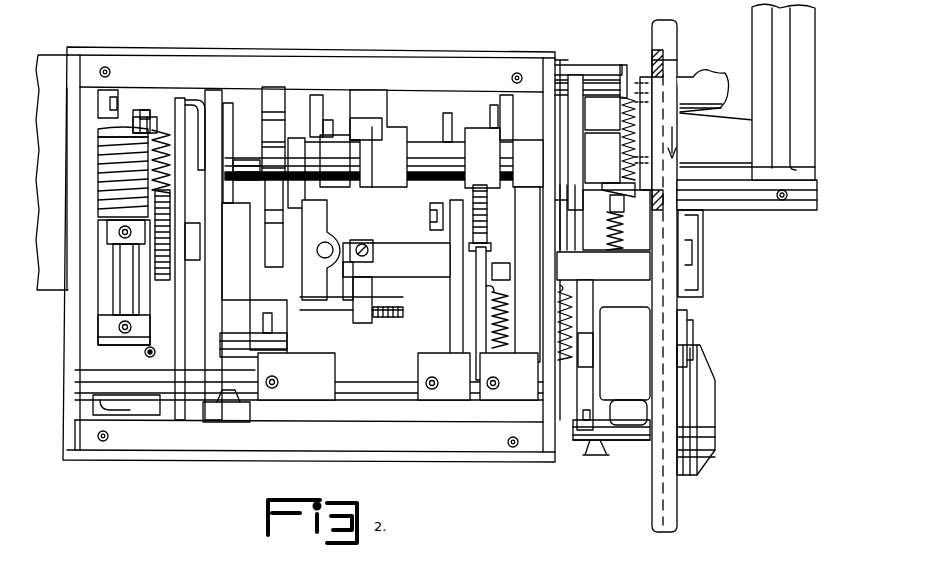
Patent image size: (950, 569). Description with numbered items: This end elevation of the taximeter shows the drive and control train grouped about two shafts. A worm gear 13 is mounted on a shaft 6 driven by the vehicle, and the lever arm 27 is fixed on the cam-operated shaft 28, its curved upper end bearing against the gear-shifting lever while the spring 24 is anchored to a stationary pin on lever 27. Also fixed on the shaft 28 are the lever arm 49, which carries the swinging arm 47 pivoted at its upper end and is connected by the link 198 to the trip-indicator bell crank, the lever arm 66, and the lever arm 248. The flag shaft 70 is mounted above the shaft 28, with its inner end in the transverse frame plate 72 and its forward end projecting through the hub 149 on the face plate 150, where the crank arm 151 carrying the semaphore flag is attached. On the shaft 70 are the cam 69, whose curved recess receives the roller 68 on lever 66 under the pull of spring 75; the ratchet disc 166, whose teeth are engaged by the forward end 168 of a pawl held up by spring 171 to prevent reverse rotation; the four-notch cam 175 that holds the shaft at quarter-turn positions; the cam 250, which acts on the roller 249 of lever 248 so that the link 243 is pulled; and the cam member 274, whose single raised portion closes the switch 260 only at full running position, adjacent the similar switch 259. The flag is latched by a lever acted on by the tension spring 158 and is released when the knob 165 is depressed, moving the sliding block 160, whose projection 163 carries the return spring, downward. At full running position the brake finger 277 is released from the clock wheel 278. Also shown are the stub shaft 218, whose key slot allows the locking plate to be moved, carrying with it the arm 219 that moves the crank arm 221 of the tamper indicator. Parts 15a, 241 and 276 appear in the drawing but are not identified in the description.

The shaft 6 is at (138, 283).
The worm gear 13 is at (110, 236).
The bolt 15a is at (150, 112).
The spring 24 is at (182, 100).
The lever arm 27 is at (176, 340).
The cam-operated shaft 28 is at (370, 402).
The swinging arm 47 is at (443, 193).
The lever arm 49 is at (458, 290).
The lever arm 66 is at (529, 150).
The roller 68 is at (507, 163).
The cam 69 is at (507, 102).
The cam shaft 70 is at (422, 148).
The transverse plate 72 is at (214, 97).
The spring 75 is at (505, 313).
The hub 149 is at (727, 182).
The face plate 150 is at (680, 325).
The crank arm 151 is at (766, 35).
The tension spring 158 is at (623, 127).
The sliding block 160 is at (623, 186).
The projection 163 is at (614, 208).
The knob 165 is at (731, 58).
The disc 166 is at (578, 117).
The forward end of pawl 168 is at (584, 297).
The spring 171 is at (583, 345).
The cam 175 is at (230, 116).
The link 198 is at (486, 255).
The stub shaft 218 is at (704, 390).
The arm 219 is at (571, 445).
The crank arm 221 is at (618, 435).
The arm 241 is at (314, 237).
The link 243 is at (343, 243).
The lever arm 248 is at (292, 140).
The roller 249 is at (272, 148).
The cam 250 is at (282, 103).
The switch arm 259 is at (319, 101).
The switch arm 260 is at (360, 110).
The cam member 274 is at (410, 175).
The screw 276 is at (372, 244).
The brake arm 277 is at (361, 328).
The wheel 278 is at (378, 318).